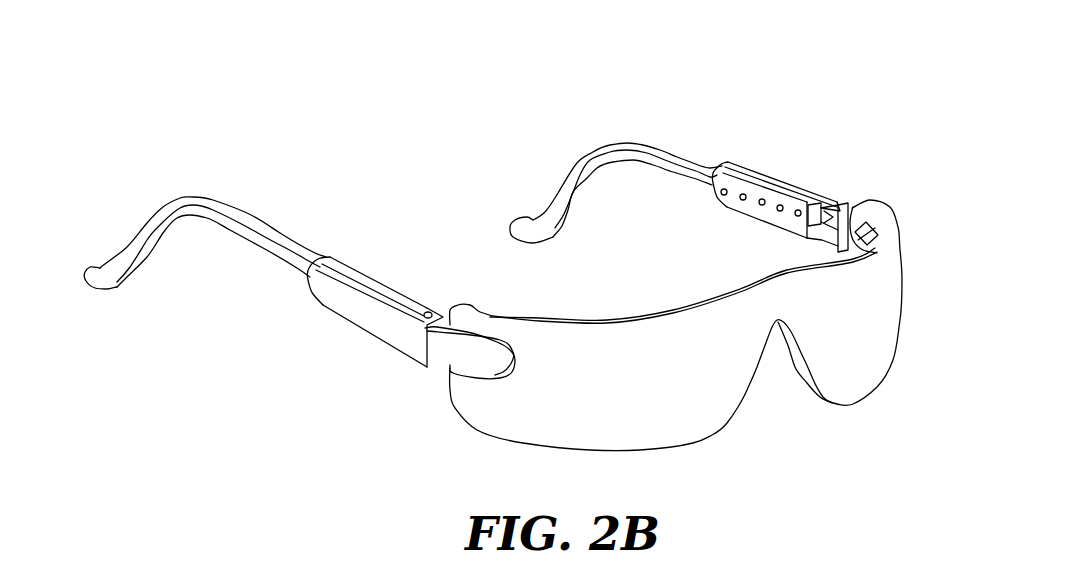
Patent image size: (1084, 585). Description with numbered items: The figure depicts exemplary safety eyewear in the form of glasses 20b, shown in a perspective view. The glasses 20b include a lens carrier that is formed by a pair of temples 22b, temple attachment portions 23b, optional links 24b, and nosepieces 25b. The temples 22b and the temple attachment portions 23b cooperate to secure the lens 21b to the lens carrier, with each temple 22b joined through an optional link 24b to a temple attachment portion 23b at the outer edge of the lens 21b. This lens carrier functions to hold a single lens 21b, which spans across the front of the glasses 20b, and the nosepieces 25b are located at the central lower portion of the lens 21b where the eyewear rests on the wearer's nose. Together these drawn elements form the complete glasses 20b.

The glasses 20b is at (637, 58).
The lens 21b is at (683, 420).
The temples 22b is at (148, 226).
The temple attachment portions 23b is at (479, 368).
The links 24b is at (362, 311).
The nosepieces 25b is at (790, 348).